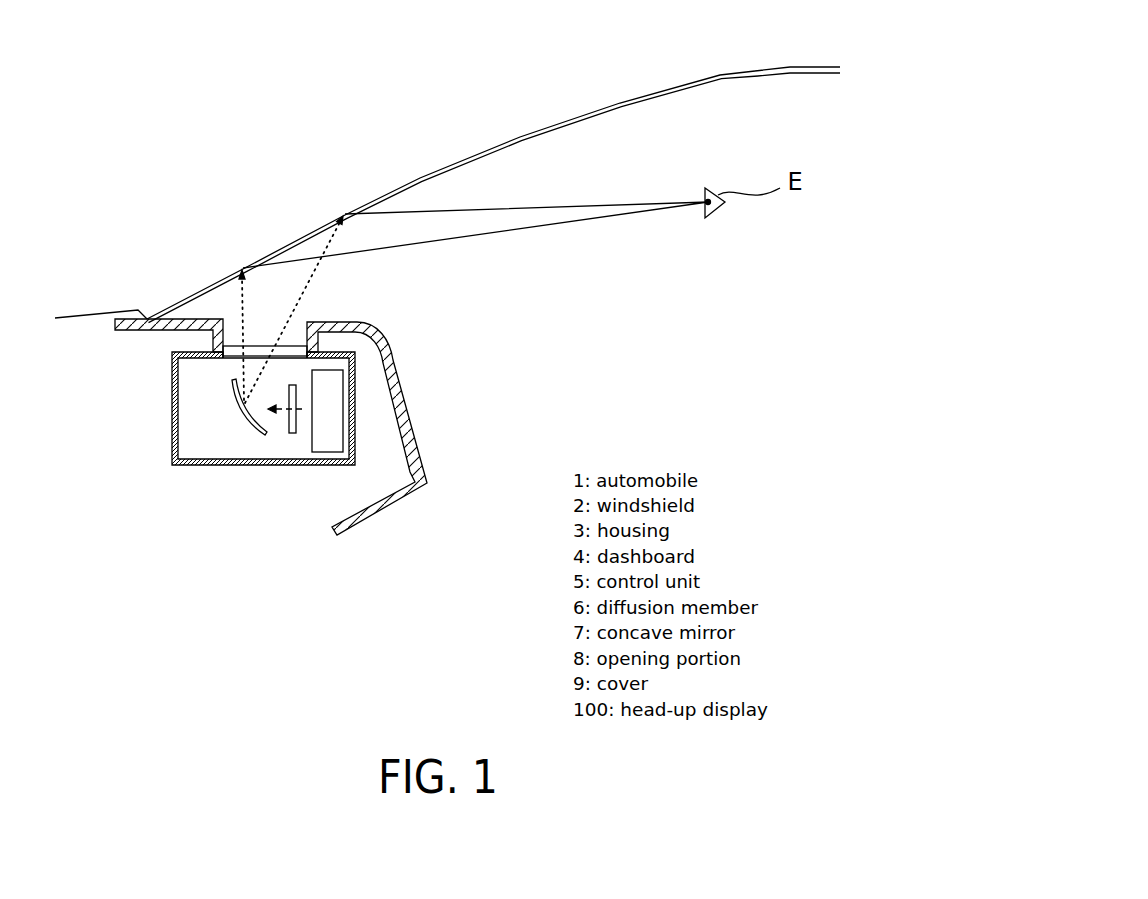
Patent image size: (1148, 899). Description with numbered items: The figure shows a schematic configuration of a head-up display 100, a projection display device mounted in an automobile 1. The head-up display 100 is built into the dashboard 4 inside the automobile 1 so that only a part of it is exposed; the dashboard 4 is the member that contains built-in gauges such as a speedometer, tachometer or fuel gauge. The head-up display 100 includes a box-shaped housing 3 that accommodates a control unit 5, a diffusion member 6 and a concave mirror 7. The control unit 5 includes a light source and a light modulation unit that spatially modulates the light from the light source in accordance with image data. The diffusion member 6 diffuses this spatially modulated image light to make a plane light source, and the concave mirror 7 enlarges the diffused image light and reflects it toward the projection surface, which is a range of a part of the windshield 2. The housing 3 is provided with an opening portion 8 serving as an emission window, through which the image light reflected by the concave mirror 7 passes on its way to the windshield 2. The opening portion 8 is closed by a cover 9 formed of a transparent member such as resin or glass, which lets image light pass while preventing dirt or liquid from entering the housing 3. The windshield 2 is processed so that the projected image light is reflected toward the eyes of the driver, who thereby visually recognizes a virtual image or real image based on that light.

The automobile 1 is at (517, 63).
The windshield 2 is at (435, 168).
The housing 3 is at (172, 365).
The dashboard 4 is at (390, 343).
The control unit 5 is at (327, 452).
The diffusion member 6 is at (290, 433).
The concave mirror 7 is at (250, 422).
The opening portion 8 is at (223, 357).
The cover 9 is at (260, 345).
The head-up display 100 is at (160, 395).